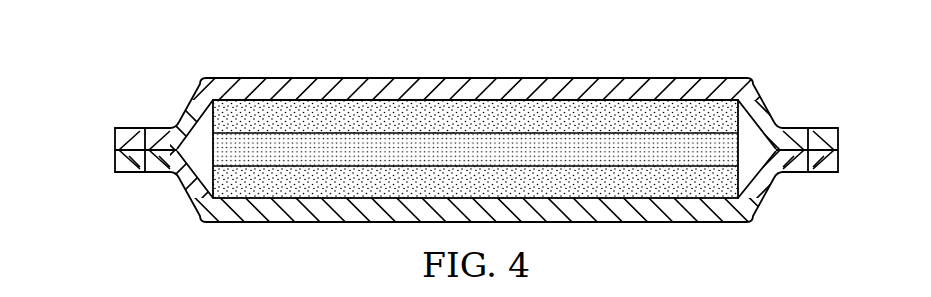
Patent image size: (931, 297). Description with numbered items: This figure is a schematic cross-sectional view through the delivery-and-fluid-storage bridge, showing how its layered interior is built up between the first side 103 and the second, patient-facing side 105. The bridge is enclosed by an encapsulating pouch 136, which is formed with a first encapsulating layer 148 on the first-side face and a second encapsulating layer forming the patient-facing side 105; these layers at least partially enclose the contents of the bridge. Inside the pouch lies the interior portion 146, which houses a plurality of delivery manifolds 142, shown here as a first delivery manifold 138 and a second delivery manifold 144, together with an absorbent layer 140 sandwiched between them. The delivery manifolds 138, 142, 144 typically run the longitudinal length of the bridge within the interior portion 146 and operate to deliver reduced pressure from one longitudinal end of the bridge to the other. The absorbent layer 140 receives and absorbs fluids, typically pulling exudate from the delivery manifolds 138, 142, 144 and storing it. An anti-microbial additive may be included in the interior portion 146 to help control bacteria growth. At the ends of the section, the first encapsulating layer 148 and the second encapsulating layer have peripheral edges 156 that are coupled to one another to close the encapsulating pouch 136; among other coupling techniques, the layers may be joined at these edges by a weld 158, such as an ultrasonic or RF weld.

The first side 103 is at (573, 78).
The second, patient-facing side 105 is at (585, 223).
The encapsulating pouch 136 is at (222, 75).
The first delivery manifold 138 is at (453, 107).
The absorbent layer 140 is at (688, 155).
The plurality of delivery manifolds 142 is at (257, 113).
The second delivery manifold 144 is at (353, 190).
The interior portion 146 is at (182, 183).
The first encapsulating layer 148 is at (653, 88).
The peripheral edges 156 is at (116, 128).
The weld 158 is at (145, 127).